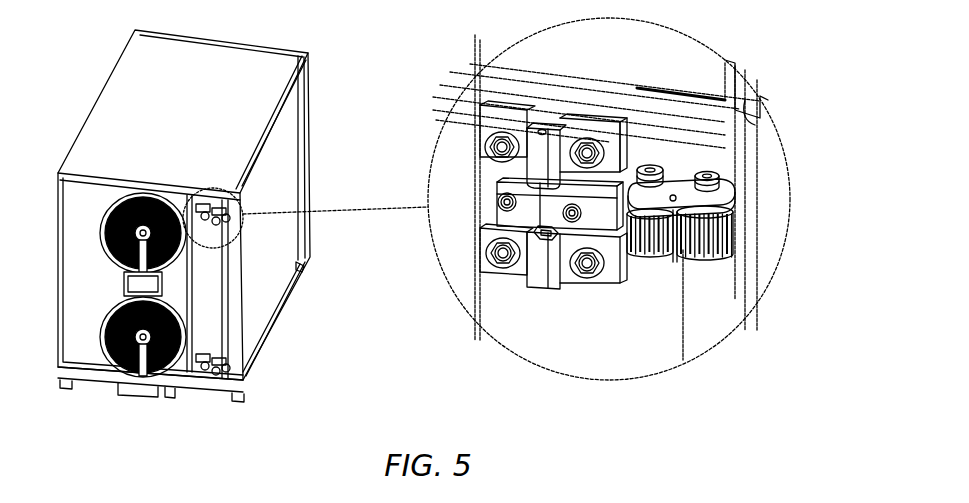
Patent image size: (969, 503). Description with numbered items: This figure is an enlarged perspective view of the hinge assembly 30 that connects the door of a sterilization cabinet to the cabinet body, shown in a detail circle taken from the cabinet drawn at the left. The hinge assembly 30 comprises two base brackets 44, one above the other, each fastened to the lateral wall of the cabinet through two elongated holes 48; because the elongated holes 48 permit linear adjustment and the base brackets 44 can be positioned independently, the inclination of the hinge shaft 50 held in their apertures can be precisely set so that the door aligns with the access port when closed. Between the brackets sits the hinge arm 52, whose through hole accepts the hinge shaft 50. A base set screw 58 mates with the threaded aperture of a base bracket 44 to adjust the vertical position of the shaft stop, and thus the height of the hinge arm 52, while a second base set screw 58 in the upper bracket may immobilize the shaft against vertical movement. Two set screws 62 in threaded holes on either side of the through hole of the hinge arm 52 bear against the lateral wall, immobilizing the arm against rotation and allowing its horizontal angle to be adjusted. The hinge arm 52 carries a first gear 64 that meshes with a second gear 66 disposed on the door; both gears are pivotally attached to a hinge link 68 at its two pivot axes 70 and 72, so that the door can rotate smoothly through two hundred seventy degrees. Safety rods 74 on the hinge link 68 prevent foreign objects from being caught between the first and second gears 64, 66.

The hinge assembly 30 is at (450, 142).
The base bracket 44 is at (505, 108).
The elongated hole 48 is at (613, 262).
The hinge shaft 50 is at (547, 236).
The hinge arm 52 is at (607, 190).
The base set screw 58 is at (545, 130).
The set screw 62 is at (505, 202).
The first gear 64 is at (653, 245).
The second gear 66 is at (722, 249).
The hinge link 68 is at (732, 197).
The pivot axis 70 is at (660, 170).
The pivot axis 72 is at (716, 175).
The safety rod 74 is at (678, 252).